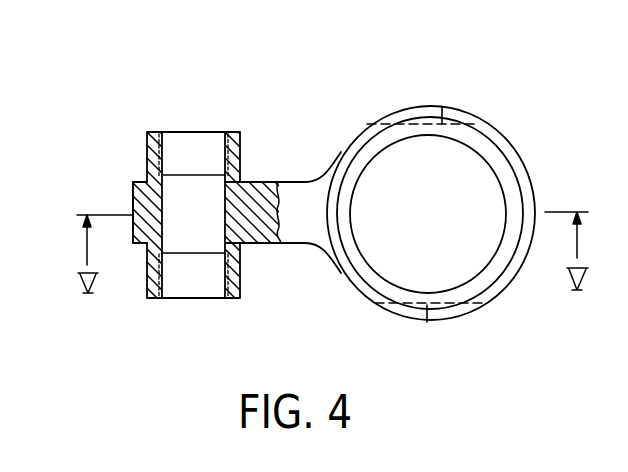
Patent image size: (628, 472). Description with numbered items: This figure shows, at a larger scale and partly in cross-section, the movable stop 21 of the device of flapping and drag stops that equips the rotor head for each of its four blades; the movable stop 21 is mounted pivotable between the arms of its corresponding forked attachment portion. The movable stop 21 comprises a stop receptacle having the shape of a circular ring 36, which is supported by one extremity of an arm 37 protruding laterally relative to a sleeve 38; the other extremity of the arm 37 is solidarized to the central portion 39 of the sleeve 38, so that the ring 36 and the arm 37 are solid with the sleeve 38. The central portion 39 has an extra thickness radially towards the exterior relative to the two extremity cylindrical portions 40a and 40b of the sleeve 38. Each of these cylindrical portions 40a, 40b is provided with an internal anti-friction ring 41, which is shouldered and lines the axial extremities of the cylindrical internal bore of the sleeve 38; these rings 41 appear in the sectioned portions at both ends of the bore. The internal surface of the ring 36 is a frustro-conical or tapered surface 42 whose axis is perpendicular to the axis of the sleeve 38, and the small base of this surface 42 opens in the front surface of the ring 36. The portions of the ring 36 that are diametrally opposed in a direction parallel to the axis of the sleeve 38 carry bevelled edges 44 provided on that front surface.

The movable stop 21 is at (402, 196).
The circular ring 36 is at (446, 216).
The arm 37 is at (292, 192).
The sleeve 38 is at (133, 193).
The central portion 39 is at (133, 215).
The extremity cylindrical portion 40a is at (148, 148).
The extremity cylindrical portion 40b is at (150, 280).
The anti-friction ring 41 is at (224, 148).
The frustro-conical surface 42 is at (485, 277).
The bevelled edges 44 is at (447, 106).